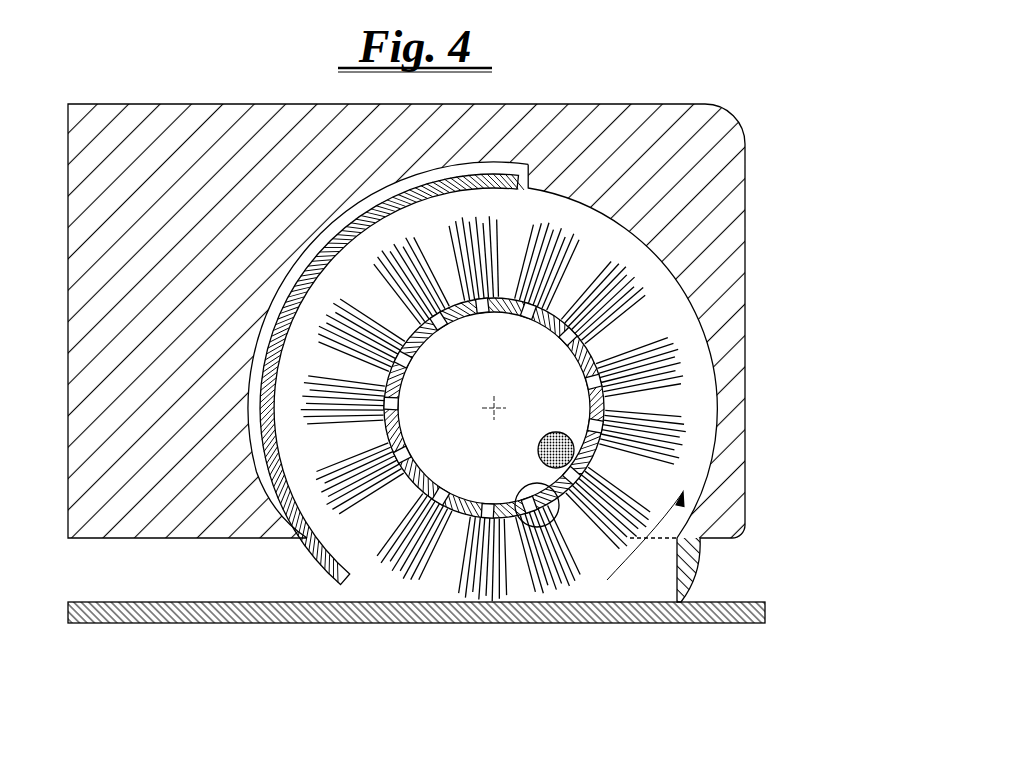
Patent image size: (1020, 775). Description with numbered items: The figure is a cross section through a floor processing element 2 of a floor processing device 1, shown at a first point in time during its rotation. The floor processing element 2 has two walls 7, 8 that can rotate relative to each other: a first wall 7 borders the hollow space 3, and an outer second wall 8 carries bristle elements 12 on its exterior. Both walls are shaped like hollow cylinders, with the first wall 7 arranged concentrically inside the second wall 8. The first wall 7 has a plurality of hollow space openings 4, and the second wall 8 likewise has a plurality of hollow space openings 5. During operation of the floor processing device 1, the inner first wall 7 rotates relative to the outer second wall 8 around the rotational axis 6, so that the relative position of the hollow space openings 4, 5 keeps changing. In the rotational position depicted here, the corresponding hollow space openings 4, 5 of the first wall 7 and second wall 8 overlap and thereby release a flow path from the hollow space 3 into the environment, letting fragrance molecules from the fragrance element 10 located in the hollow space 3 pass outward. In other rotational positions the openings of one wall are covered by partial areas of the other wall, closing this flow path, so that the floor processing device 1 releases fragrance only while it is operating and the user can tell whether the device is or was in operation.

The floor processing device 1 is at (768, 150).
The floor processing element 2 is at (325, 540).
The hollow space 3 is at (507, 358).
The hollow space openings 4 is at (437, 313).
The hollow space openings 5 is at (507, 358).
The rotational axis 6 is at (500, 402).
The first wall 7 is at (520, 322).
The second wall 8 is at (561, 488).
The fragrance element 10 is at (538, 448).
The bristle elements 12 is at (670, 448).